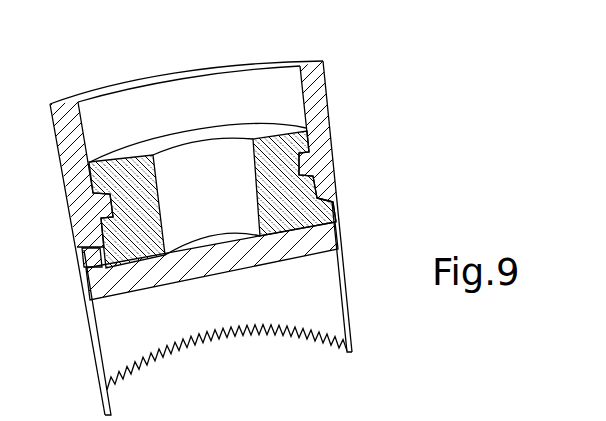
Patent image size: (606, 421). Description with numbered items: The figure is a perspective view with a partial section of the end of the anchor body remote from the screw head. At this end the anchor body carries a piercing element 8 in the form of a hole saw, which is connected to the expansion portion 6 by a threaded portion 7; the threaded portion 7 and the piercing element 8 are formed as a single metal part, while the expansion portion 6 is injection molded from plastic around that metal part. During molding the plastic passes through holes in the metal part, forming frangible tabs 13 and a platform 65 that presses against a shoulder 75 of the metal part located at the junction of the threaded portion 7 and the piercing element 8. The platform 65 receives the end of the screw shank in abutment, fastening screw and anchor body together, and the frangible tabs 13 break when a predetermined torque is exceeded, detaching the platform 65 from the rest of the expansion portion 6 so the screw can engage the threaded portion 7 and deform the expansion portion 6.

The expansion portion 6 is at (315, 92).
The threaded portion 7 is at (282, 165).
The piercing element 8 is at (347, 289).
The frangible tabs 13 is at (100, 264).
The platform 65 is at (232, 257).
The shoulder 75 is at (330, 207).